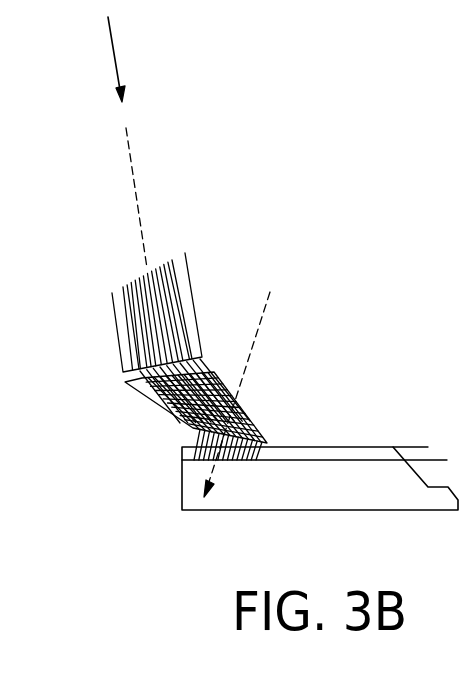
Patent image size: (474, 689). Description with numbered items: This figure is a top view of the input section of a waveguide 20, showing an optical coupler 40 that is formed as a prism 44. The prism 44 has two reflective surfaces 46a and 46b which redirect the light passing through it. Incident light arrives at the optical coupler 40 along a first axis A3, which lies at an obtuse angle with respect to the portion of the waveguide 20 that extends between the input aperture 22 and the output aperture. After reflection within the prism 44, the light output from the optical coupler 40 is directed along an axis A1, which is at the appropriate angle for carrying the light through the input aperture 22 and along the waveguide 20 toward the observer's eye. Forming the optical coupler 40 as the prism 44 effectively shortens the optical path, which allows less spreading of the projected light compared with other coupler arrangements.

The waveguide 20 is at (331, 497).
The input aperture 22 is at (265, 440).
The optical coupler 40 is at (363, 268).
The prism 44 is at (153, 387).
The reflective surface 46a is at (172, 407).
The reflective surface 46b is at (250, 412).
The axis A1 is at (265, 307).
The first axis A3 is at (128, 130).